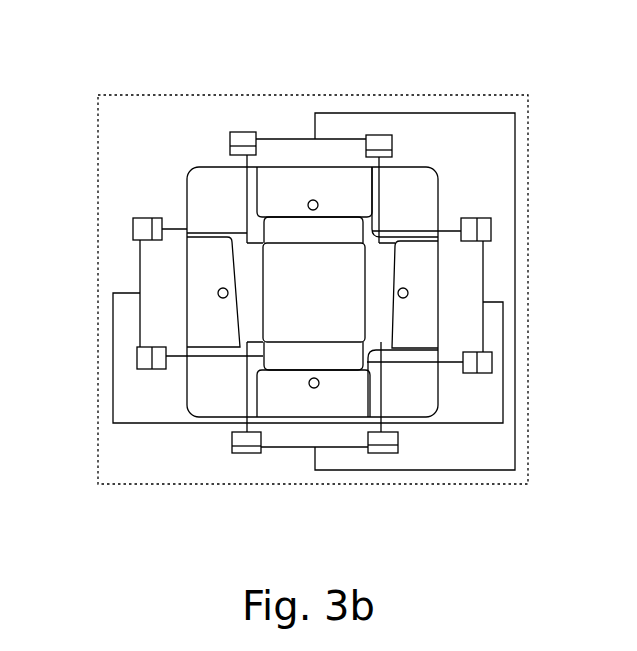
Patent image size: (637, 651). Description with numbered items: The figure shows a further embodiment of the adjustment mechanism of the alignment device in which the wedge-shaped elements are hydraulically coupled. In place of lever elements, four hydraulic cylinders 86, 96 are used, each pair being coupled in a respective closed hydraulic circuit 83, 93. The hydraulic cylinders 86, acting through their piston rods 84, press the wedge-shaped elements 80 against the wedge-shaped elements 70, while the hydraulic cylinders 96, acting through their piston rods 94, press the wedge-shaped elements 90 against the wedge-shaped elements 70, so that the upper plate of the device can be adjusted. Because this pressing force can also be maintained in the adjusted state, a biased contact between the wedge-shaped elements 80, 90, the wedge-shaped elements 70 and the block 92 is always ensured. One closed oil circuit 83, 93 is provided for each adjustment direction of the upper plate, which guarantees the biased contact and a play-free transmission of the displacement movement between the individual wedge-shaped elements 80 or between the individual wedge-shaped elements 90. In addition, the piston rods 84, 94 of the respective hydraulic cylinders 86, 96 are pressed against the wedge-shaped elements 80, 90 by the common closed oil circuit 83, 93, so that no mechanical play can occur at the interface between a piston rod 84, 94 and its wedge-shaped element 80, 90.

The wedge-shaped element 70 is at (313, 187).
The wedge-shaped element 80 is at (243, 283).
The hydraulic circuit 83 is at (524, 172).
The piston rod 84 is at (245, 390).
The hydraulic cylinder 86 is at (245, 137).
The wedge-shaped element 90 is at (350, 228).
The block 92 is at (338, 270).
The hydraulic circuit 93 is at (138, 427).
The piston rod 94 is at (453, 233).
The hydraulic cylinder 96 is at (142, 228).